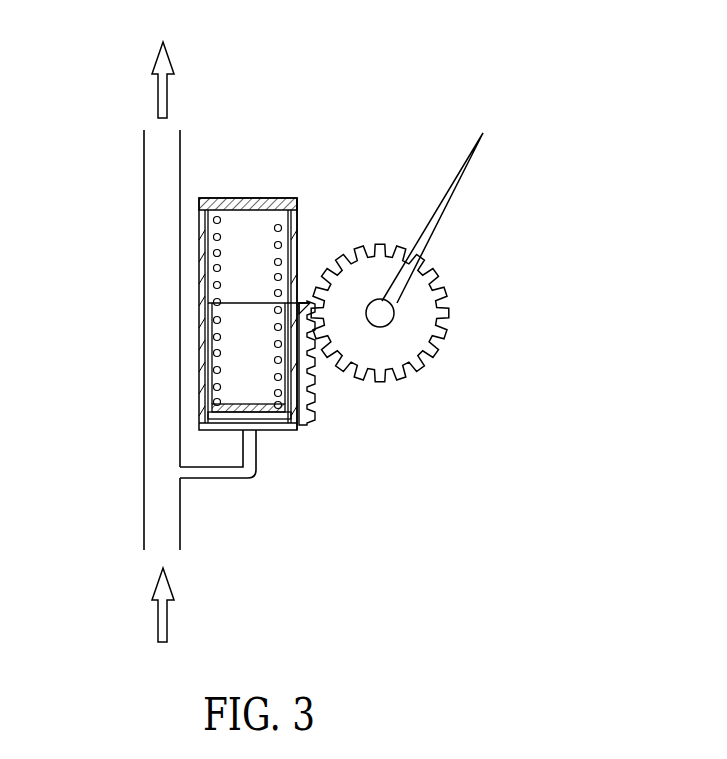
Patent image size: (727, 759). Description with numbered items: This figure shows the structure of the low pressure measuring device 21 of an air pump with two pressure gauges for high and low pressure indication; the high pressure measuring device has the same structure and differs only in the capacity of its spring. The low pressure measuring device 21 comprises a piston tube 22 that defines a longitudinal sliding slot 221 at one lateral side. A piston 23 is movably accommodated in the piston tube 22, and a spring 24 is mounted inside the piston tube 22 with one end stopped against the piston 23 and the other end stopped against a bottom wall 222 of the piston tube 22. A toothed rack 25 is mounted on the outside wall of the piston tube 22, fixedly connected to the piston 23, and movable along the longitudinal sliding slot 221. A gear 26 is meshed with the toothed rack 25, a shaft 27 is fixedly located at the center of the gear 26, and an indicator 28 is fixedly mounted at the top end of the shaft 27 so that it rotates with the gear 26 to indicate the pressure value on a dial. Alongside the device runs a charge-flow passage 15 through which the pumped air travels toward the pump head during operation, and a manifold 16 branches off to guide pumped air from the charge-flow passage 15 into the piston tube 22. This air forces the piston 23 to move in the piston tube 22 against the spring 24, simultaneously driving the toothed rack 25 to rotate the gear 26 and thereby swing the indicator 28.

The charge-flow passage 15 is at (160, 505).
The manifold 16 is at (210, 473).
The low pressure measuring device 21 is at (292, 122).
The piston tube 22 is at (202, 235).
The longitudinal sliding slot 221 is at (300, 250).
The bottom wall 222 is at (277, 198).
The piston 23 is at (270, 413).
The spring 24 is at (277, 243).
The toothed rack 25 is at (320, 393).
The gear 26 is at (447, 313).
The shaft 27 is at (385, 315).
The indicator 28 is at (447, 190).